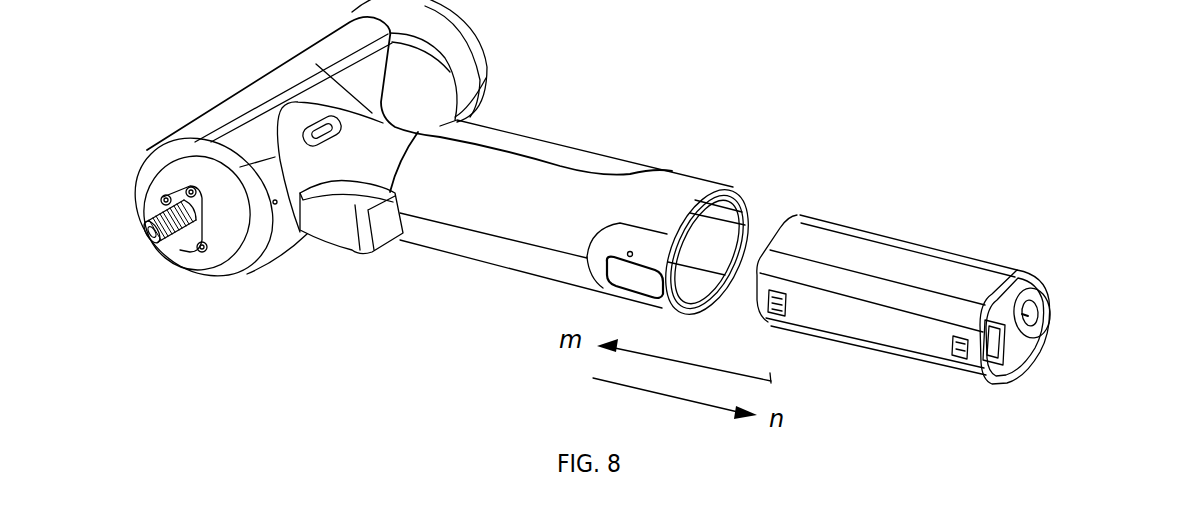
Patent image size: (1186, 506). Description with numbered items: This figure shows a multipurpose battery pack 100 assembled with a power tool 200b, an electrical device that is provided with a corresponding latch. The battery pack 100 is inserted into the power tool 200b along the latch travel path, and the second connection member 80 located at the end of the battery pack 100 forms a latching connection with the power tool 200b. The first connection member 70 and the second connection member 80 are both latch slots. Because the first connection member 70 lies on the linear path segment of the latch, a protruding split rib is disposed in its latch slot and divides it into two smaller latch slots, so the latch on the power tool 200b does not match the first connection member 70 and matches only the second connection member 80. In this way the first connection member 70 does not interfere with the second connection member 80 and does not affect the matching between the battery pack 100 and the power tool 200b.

The power tool 200b is at (648, 112).
The battery pack 100 is at (899, 295).
The first connection member 70 is at (777, 316).
The second connection member 80 is at (961, 360).